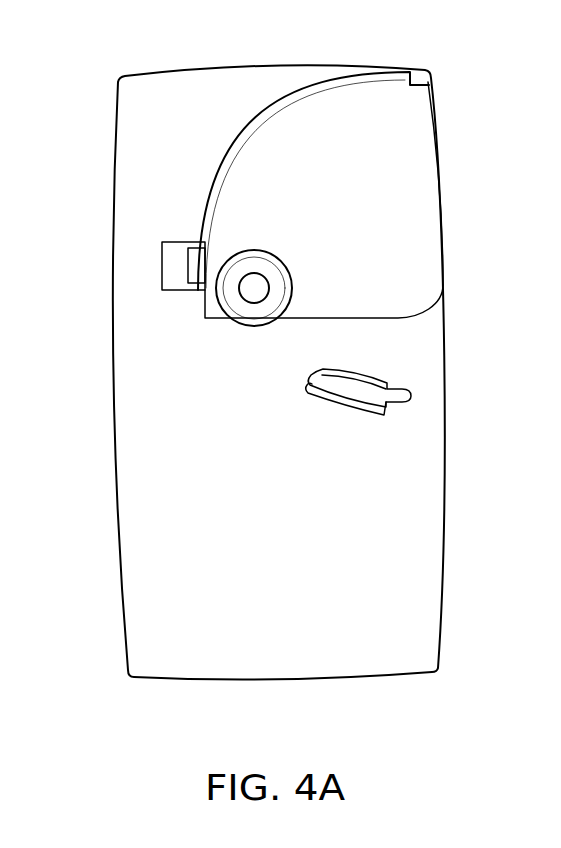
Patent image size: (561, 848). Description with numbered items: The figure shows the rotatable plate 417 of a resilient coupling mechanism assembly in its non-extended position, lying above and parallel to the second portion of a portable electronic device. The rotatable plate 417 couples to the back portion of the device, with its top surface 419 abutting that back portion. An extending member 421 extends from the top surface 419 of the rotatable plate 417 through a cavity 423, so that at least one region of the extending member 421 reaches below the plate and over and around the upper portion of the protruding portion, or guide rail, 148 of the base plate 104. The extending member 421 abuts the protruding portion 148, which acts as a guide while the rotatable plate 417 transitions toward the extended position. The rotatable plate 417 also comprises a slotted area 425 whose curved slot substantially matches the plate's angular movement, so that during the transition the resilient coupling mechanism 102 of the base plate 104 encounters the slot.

The resilient coupling mechanism 102 is at (250, 326).
The base plate 104 is at (441, 153).
The protruding portion (guide rail) 148 is at (250, 120).
The rotatable plate 417 is at (446, 535).
The top surface 419 is at (223, 658).
The extending member 421 is at (185, 262).
The cavity 423 is at (178, 275).
The slotted area 425 is at (359, 372).